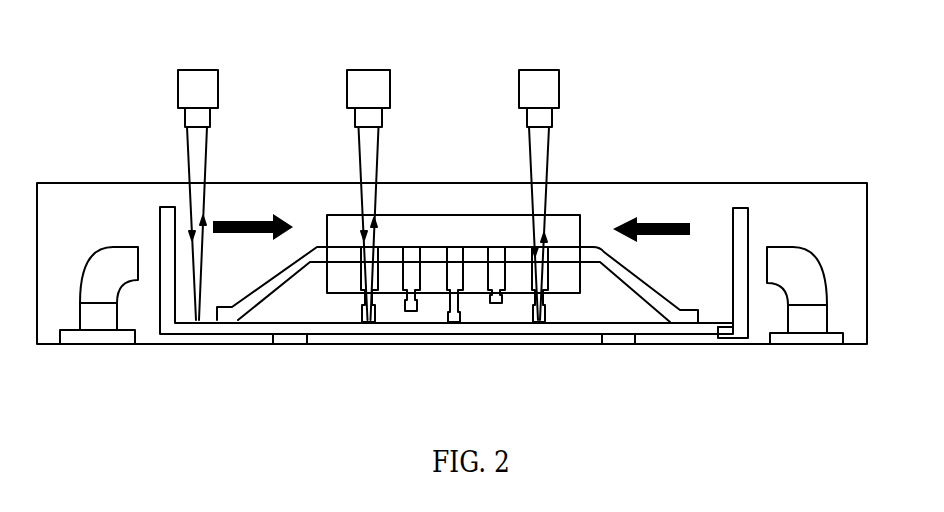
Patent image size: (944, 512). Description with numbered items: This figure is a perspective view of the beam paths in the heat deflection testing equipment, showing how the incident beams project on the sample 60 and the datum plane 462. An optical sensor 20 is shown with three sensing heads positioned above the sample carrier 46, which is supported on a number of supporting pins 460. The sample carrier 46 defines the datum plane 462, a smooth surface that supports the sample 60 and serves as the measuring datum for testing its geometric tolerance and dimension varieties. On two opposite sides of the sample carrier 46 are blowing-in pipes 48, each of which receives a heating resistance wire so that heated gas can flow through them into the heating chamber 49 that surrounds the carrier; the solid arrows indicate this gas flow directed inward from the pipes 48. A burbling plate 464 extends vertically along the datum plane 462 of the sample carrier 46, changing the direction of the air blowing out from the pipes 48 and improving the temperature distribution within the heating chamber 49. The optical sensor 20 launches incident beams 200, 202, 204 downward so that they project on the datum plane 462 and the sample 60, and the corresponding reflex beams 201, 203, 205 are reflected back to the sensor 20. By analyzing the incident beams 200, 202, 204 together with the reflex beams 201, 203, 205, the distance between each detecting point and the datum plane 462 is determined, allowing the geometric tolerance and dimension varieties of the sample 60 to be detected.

The optical sensor 20 is at (203, 54).
The incident beam 200 is at (190, 175).
The reflex beam 201 is at (205, 157).
The incident beam 202 is at (361, 176).
The reflex beam 203 is at (377, 156).
The incident beam 204 is at (532, 187).
The reflex beam 205 is at (547, 175).
The sample carrier 46 is at (650, 330).
The supporting pin 460 is at (292, 340).
The datum plane 462 is at (717, 332).
The burbling plate 464 is at (740, 235).
The blowing-in pipe 48 is at (798, 277).
The heating chamber 49 is at (70, 210).
The sample 60 is at (594, 252).